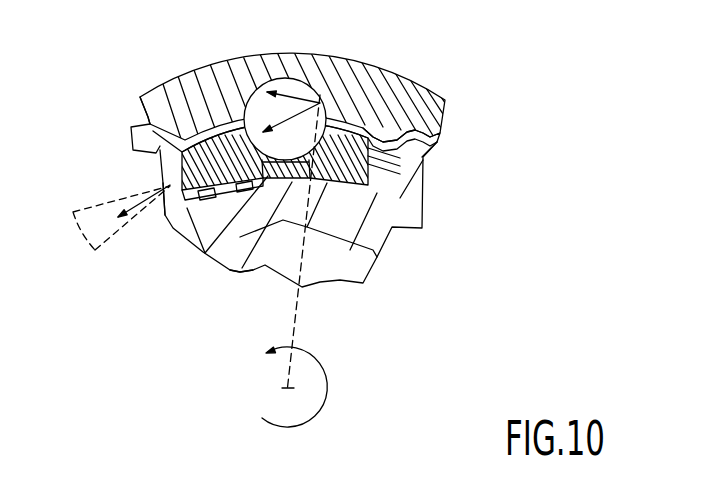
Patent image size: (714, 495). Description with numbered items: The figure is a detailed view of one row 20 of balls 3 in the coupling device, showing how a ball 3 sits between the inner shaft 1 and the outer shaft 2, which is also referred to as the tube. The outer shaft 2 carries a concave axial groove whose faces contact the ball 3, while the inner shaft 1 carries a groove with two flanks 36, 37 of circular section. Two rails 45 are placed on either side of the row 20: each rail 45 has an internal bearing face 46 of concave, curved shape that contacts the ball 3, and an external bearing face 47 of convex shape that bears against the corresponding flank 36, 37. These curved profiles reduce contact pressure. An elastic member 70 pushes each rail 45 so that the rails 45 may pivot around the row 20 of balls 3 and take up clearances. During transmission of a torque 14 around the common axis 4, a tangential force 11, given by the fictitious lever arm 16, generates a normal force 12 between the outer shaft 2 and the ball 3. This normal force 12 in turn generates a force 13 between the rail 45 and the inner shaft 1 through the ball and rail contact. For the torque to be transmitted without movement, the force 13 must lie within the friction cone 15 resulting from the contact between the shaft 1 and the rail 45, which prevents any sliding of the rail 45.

The inner shaft 1 is at (422, 228).
The outer shaft 2 is at (371, 95).
The ball 3 is at (298, 88).
The common axis 4 is at (287, 388).
The tangential force 11 is at (256, 103).
The normal force 12 is at (232, 95).
The force 13 is at (126, 210).
The torque 14 is at (328, 392).
The friction cone 15 is at (120, 228).
The fictitious lever arm 16 is at (300, 302).
The axial row 20 is at (248, 95).
The flank 36 is at (166, 224).
The flank 37 is at (390, 220).
The rail 45 is at (147, 100).
The internal bearing face 46 is at (200, 95).
The external bearing face 47 is at (155, 128).
The elastic member 70 is at (243, 273).